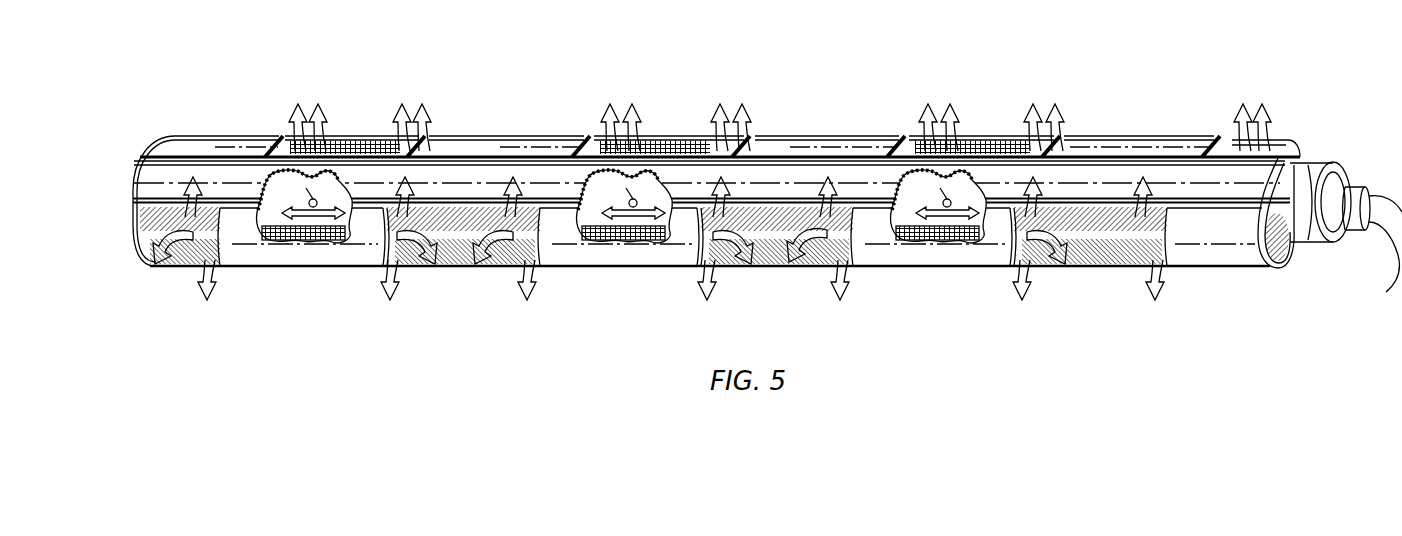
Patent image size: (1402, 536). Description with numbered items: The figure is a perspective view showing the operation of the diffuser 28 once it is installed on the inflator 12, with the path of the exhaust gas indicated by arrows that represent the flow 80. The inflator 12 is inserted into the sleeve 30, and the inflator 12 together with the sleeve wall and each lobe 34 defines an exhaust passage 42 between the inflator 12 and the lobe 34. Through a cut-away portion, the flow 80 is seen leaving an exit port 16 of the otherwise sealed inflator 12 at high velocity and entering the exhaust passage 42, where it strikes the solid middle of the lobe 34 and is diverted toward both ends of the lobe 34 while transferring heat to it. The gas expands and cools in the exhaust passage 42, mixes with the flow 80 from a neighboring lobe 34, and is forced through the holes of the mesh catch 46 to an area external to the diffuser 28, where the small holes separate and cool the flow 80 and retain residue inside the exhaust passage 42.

The inflator 12 is at (1339, 150).
The exit port 16 is at (312, 200).
The diffuser 28 is at (668, 322).
The sleeve 30 is at (714, 185).
The lobe 34 is at (240, 128).
The exhaust passage 42 is at (380, 275).
The catch 46 is at (352, 141).
The flow 80 is at (427, 118).